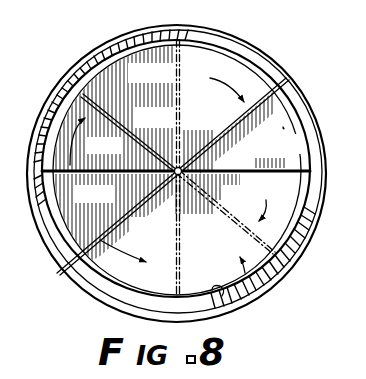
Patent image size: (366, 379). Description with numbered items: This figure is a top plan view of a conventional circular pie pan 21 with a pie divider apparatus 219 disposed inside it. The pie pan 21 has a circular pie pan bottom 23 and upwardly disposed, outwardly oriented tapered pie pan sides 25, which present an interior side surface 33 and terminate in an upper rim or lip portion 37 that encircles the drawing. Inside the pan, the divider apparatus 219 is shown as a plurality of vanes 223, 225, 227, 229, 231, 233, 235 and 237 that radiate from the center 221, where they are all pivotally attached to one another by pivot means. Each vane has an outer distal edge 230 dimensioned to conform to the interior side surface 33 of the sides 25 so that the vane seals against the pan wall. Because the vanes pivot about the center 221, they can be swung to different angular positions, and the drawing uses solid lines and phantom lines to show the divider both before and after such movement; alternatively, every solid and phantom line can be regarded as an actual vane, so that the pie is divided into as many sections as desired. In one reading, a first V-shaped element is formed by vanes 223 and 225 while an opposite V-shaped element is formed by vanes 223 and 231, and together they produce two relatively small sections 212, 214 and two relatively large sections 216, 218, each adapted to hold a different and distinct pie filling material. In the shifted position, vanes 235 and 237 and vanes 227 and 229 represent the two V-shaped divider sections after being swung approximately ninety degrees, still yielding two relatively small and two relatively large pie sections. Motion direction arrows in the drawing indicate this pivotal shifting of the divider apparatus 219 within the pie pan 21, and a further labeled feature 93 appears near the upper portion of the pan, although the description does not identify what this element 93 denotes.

The pie pan 21 is at (330, 125).
The divider apparatus 219 is at (279, 48).
The upper rim or lip portion 37 is at (301, 100).
The pie pan sides 25 is at (63, 78).
The pie pan bottom 23 is at (221, 249).
The relatively small section 212 is at (78, 231).
The relatively large section 216 is at (190, 58).
The outer distal edges 230 is at (290, 77).
The relatively small section 214 is at (322, 152).
The slot 93 is at (208, 60).
The vane 233 is at (198, 136).
The vane 231 is at (288, 130).
The vane 235 is at (176, 78).
The center 221 is at (174, 132).
The vane 237 is at (82, 128).
The vane 223 is at (91, 195).
The vane 225 is at (123, 210).
The vane 229 is at (246, 210).
The vane 227 is at (182, 262).
The relatively large section 218 is at (258, 291).
The interior side surface 33 is at (226, 296).